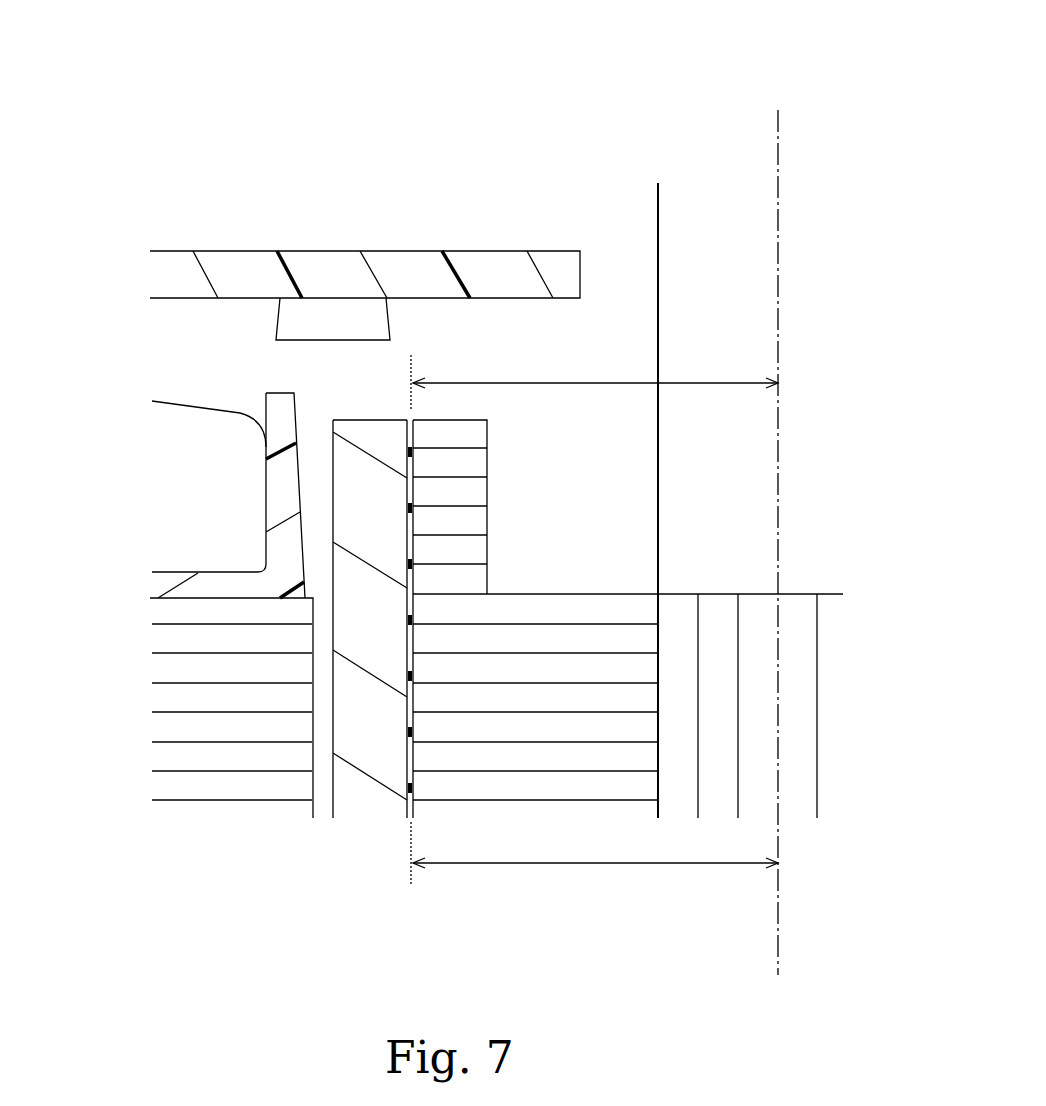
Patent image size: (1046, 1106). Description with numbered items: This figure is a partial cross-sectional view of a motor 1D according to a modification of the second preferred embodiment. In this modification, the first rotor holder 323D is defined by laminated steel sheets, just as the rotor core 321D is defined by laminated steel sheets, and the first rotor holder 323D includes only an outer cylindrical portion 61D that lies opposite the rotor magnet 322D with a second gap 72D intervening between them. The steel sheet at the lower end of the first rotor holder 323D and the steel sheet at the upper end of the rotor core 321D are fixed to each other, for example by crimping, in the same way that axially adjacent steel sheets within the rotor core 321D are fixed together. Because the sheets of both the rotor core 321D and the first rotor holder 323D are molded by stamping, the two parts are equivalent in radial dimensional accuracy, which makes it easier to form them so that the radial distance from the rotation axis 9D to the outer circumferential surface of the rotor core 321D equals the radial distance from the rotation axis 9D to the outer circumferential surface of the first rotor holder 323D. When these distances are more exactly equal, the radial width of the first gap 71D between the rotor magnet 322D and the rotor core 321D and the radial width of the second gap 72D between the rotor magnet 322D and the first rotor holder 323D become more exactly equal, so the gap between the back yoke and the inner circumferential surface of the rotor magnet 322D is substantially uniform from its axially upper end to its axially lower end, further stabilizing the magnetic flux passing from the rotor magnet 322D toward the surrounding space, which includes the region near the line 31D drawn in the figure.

The motor 1D is at (192, 112).
The rotation axis 9D is at (780, 152).
The stator inner circumferential surface 31D is at (678, 220).
The outer cylindrical portion 61D is at (463, 520).
The first gap 71D is at (405, 754).
The second gap 72D is at (408, 450).
The rotor core 321D is at (607, 728).
The rotor magnet 322D is at (360, 742).
The first rotor holder 323D is at (495, 456).